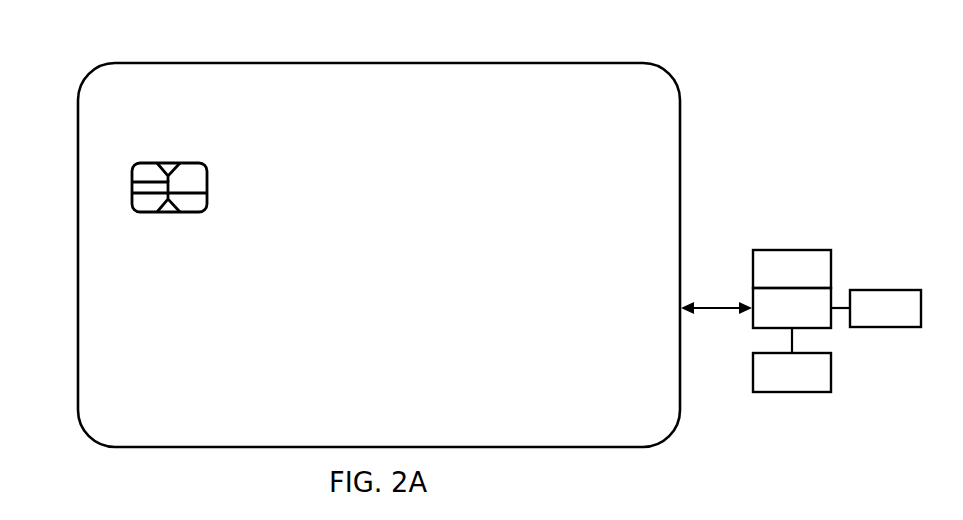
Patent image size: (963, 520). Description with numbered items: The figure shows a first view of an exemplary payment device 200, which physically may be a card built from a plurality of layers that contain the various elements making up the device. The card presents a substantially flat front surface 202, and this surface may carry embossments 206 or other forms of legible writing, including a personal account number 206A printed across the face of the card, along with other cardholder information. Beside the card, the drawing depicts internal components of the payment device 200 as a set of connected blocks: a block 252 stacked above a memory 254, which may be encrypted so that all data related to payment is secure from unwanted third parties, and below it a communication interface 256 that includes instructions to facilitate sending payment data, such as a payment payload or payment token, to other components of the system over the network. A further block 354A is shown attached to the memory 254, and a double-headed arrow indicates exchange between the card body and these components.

The payment device 200 is at (178, 63).
The front surface 202 is at (662, 172).
The personal account number 206A is at (98, 302).
The embossments 206 is at (464, 403).
The processor 252 is at (792, 269).
The memory 254 is at (792, 308).
The communication interface 256 is at (792, 372).
The applet 354A is at (885, 308).